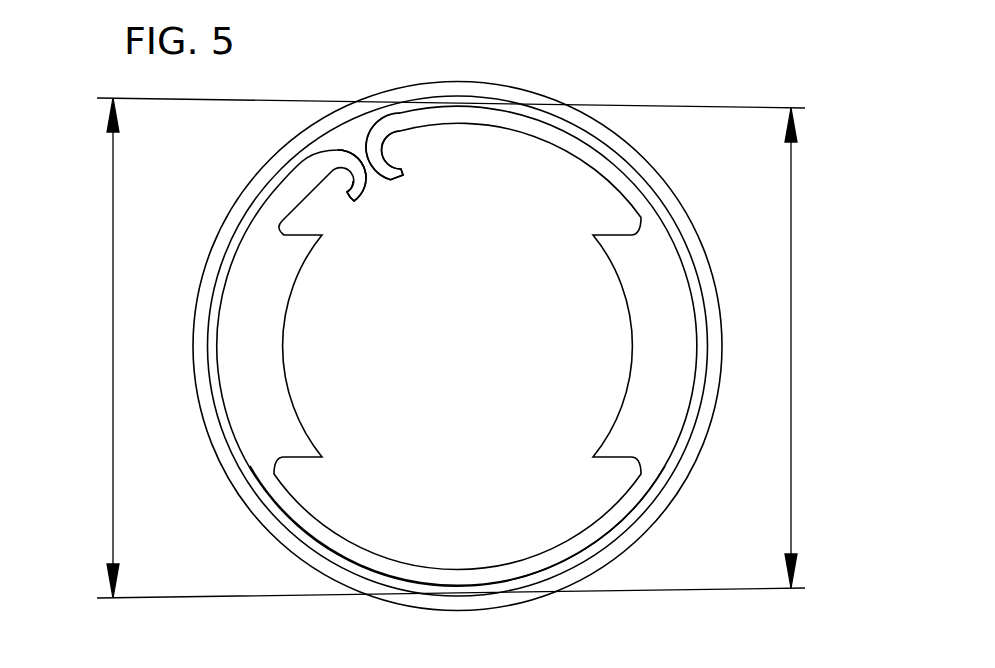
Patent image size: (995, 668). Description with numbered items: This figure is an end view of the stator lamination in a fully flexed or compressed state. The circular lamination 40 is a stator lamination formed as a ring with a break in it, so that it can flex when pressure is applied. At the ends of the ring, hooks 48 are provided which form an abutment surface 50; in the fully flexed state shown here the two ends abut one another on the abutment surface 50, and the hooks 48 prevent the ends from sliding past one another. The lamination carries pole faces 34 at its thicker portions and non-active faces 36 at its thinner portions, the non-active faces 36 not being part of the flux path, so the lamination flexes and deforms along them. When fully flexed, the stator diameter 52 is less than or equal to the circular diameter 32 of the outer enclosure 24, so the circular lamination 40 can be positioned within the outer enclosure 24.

The outer enclosure 24 is at (525, 603).
The circular diameter 32 is at (113, 330).
The pole faces 34 is at (633, 378).
The non-active faces 36 is at (428, 570).
The circular lamination 40 is at (615, 163).
The hooks 48 is at (404, 181).
The abutment surface 50 is at (368, 172).
The stator diameter 52 is at (791, 328).